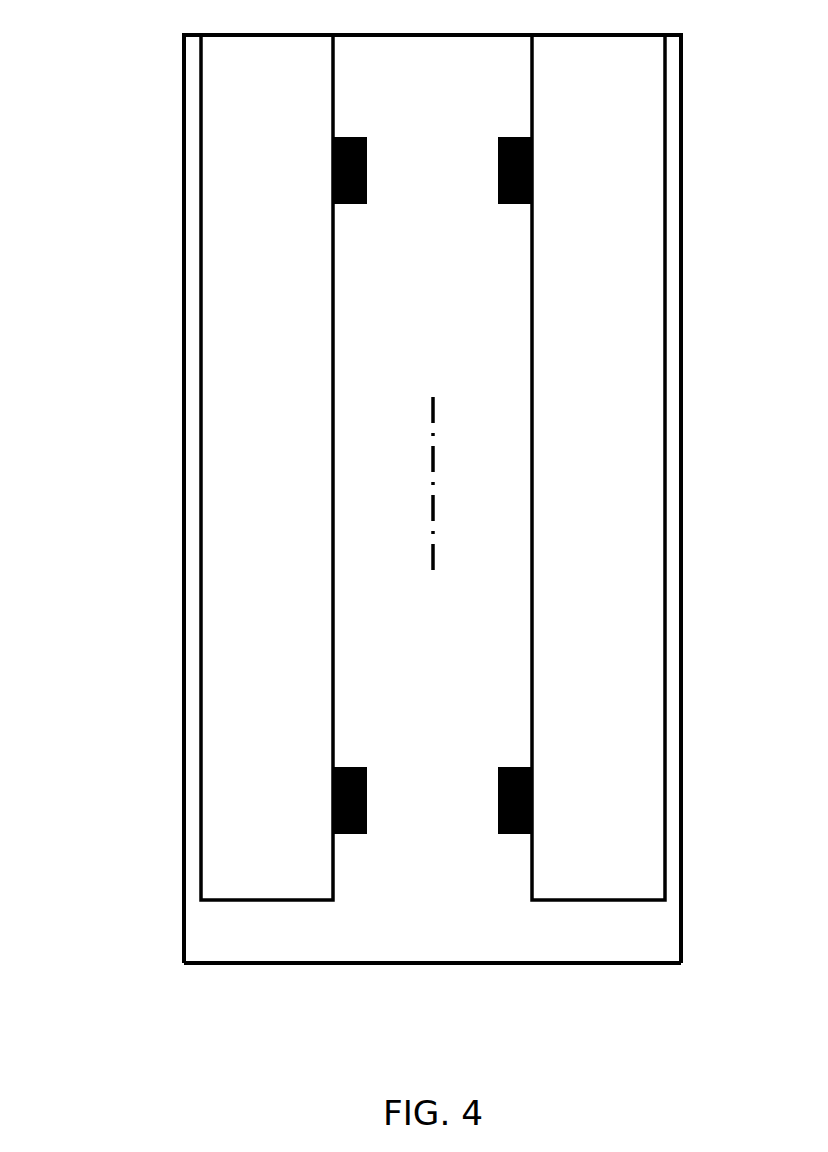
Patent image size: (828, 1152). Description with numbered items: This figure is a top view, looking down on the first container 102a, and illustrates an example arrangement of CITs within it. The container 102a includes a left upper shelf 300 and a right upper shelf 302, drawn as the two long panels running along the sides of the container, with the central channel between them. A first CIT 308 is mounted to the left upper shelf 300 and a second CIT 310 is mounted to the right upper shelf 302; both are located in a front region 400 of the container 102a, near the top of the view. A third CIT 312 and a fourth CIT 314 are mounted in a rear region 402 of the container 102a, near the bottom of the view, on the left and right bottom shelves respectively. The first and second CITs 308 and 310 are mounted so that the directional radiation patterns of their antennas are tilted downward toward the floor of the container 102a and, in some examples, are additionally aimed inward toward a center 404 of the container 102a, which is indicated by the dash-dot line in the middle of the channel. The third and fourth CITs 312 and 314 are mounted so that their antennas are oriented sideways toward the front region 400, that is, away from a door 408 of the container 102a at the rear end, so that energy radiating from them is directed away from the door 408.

The first container 102a is at (430, 34).
The left upper shelf 300 is at (335, 329).
The right upper shelf 302 is at (530, 343).
The first CIT 308 is at (355, 137).
The second CIT 310 is at (500, 204).
The third CIT 312 is at (350, 767).
The fourth CIT 314 is at (499, 834).
The front region 400 is at (148, 164).
The rear region 402 is at (148, 798).
The center 404 is at (431, 507).
The door 408 is at (432, 965).